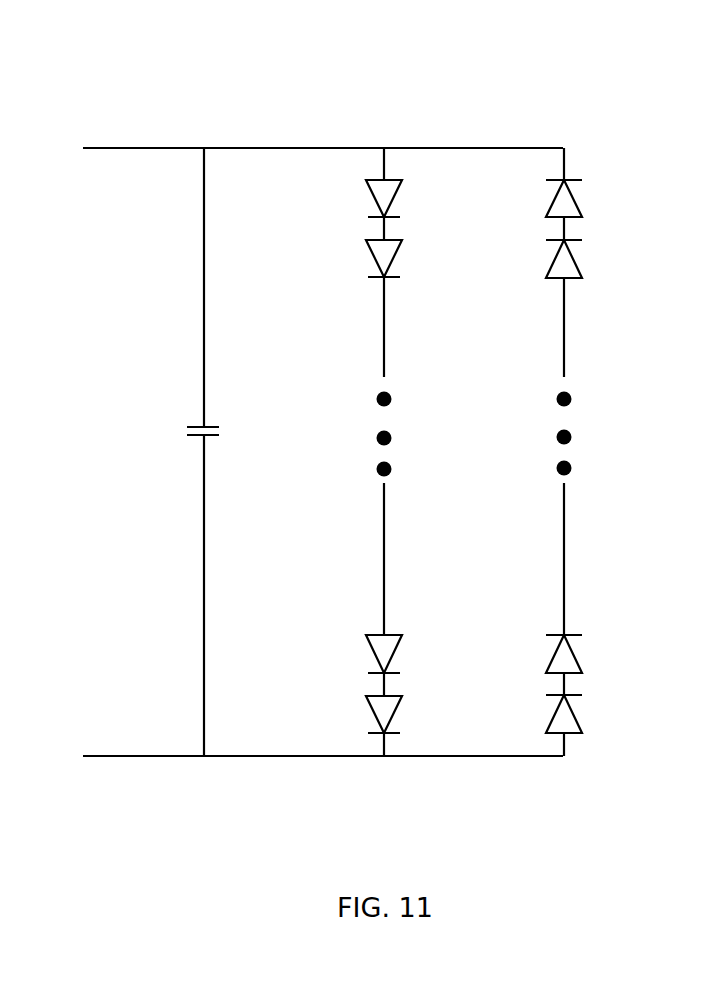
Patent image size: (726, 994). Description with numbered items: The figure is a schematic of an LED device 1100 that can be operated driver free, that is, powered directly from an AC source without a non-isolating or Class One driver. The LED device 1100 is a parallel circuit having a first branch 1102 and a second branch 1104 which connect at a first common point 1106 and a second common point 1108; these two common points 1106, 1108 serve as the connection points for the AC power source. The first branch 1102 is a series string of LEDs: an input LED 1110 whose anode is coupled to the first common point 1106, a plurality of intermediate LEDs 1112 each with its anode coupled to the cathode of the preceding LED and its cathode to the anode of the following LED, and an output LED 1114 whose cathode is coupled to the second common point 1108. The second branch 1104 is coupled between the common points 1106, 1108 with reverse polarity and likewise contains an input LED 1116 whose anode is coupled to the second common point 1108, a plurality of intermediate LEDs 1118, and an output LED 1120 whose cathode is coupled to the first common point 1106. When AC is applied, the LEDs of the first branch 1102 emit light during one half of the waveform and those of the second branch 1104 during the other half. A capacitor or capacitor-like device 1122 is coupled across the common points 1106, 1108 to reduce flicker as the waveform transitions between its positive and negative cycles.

The LED device 1100 is at (353, 77).
The first branch 1102 is at (374, 176).
The second branch 1104 is at (549, 171).
The first common point 1106 is at (447, 146).
The second common point 1108 is at (460, 757).
The input LED 1110 is at (368, 200).
The intermediate LEDs 1112 is at (367, 713).
The output LED 1114 is at (368, 407).
The input LED 1116 is at (583, 725).
The intermediate LEDs 1118 is at (596, 406).
The output LED 1120 is at (581, 207).
The capacitor or capacitor-like device 1122 is at (200, 437).